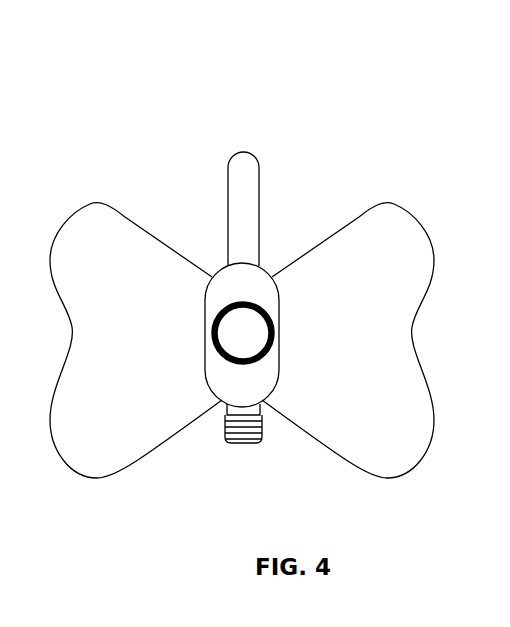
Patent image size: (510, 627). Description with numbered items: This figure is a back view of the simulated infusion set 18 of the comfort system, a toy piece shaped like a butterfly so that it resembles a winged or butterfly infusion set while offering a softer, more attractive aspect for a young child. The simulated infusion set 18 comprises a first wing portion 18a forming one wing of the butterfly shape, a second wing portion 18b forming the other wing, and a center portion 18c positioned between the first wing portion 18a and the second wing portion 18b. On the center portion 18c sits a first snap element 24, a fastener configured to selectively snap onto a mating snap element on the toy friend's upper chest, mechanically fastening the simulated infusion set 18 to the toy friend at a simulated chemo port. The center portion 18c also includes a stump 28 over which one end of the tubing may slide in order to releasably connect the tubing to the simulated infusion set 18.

The simulated infusion set 18 is at (201, 115).
The first wing portion 18a is at (75, 188).
The second wing portion 18b is at (364, 186).
The center portion 18c is at (260, 136).
The first snap element 24 is at (216, 293).
The stump 28 is at (223, 455).